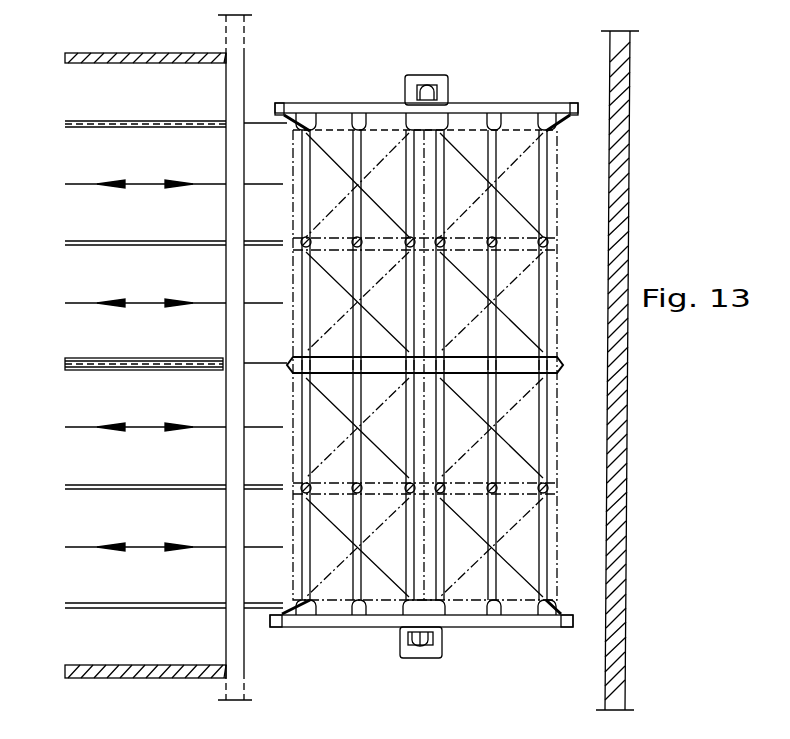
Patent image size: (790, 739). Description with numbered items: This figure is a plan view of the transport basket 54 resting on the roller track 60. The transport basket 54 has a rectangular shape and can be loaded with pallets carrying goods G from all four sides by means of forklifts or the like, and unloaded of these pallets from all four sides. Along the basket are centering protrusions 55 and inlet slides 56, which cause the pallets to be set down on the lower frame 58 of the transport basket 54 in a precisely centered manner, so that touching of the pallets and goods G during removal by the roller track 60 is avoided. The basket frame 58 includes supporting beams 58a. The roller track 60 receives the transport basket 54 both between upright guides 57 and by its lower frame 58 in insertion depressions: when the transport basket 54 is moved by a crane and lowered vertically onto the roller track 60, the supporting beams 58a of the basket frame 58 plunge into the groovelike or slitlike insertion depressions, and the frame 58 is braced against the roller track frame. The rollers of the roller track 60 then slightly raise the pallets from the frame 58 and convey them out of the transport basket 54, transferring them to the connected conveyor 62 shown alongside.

The transport basket 54 is at (472, 630).
The centering protrusions 55 is at (437, 237).
The inlet slides 56 is at (560, 122).
The upright guides 57 is at (406, 90).
The lower frame 58 is at (332, 107).
The supporting beams 58a is at (540, 153).
The roller track 60 is at (258, 122).
The connected conveyor 62 is at (90, 122).
The goods G is at (292, 222).